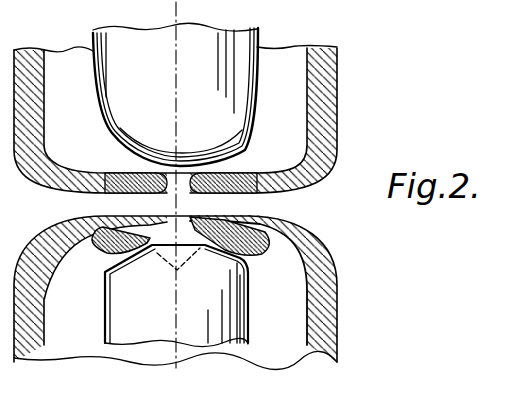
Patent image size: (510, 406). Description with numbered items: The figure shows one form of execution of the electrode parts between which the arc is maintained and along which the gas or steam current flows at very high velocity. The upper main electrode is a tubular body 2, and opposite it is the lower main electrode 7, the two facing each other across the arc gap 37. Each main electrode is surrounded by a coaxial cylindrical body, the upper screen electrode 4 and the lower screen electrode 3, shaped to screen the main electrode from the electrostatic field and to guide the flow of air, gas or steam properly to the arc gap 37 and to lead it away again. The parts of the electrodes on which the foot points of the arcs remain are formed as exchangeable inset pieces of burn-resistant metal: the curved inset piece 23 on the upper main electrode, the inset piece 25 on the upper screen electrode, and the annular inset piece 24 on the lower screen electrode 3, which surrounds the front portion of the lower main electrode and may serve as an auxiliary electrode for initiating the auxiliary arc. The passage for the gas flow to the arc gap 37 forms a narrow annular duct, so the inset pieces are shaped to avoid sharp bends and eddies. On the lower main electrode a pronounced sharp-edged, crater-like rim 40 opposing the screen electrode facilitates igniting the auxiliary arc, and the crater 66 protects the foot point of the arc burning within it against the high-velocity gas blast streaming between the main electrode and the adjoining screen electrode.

The tubular body 2 is at (195, 90).
The coaxial cylindrical body 4 is at (322, 105).
The inset piece 23 is at (205, 146).
The inset piece 25 is at (266, 183).
The arc gap 37 is at (172, 203).
The crater-like rim 40 is at (110, 227).
The inset piece 24 is at (268, 230).
The coaxial cylindrical body 3 is at (325, 308).
The lower cap member 7 is at (167, 318).
The crater 66 is at (163, 257).